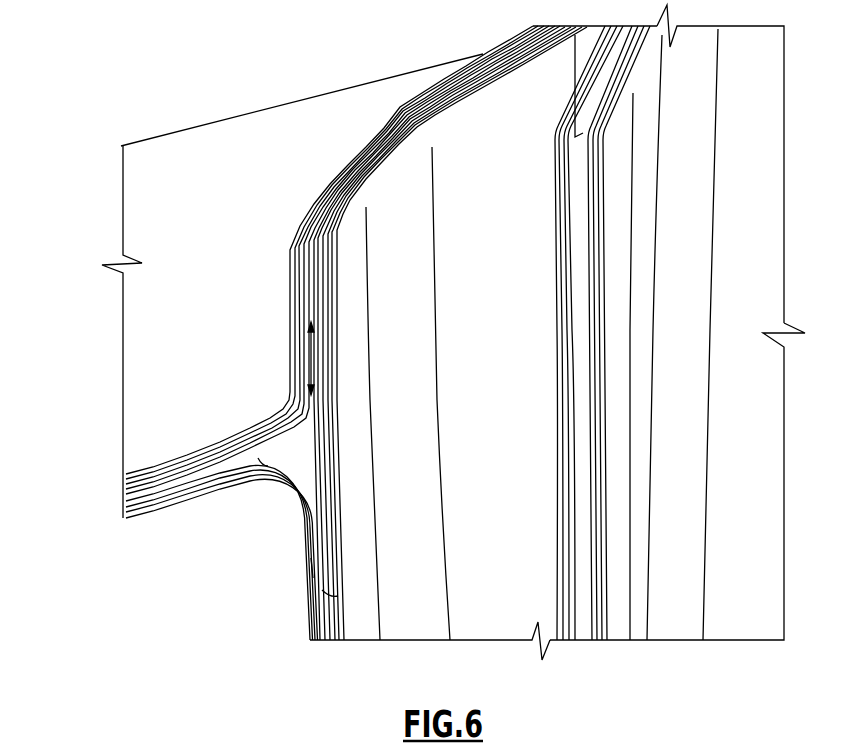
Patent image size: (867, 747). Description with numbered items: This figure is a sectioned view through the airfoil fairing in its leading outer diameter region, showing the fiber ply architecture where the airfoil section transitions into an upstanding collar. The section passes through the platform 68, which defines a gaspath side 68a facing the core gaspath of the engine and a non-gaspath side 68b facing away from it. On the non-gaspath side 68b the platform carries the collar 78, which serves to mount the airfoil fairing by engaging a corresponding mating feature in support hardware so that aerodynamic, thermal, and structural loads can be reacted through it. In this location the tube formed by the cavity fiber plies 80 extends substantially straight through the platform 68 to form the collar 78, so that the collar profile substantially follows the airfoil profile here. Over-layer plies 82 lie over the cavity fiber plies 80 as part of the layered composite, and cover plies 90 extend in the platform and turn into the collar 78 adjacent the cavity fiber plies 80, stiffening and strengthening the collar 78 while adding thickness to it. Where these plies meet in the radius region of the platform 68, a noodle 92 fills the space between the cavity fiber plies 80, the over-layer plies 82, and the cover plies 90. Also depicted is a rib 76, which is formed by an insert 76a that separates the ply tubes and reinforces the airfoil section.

The platform 68 is at (115, 520).
The gaspath side 68a is at (165, 505).
The non-gaspath side 68b is at (152, 363).
The rib 76 is at (585, 583).
The insert 76a is at (584, 618).
The collar 78 is at (283, 407).
The cavity fiber plies 80 is at (337, 598).
The over-layer plies 82 is at (313, 578).
The cover plies 90 is at (311, 336).
The noodle 92 is at (292, 462).